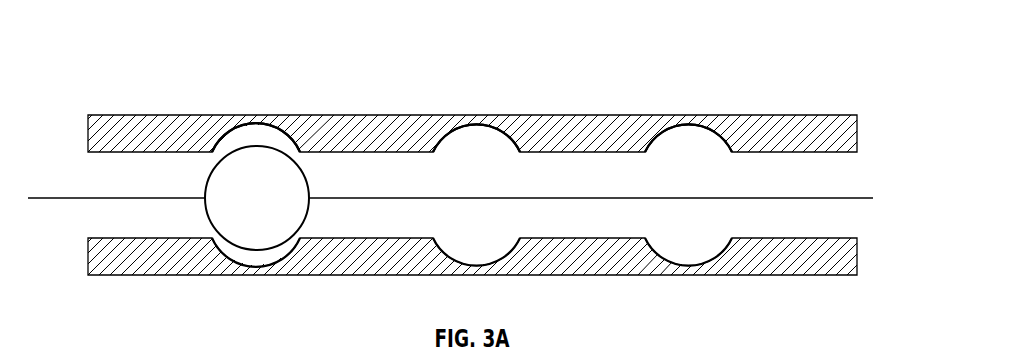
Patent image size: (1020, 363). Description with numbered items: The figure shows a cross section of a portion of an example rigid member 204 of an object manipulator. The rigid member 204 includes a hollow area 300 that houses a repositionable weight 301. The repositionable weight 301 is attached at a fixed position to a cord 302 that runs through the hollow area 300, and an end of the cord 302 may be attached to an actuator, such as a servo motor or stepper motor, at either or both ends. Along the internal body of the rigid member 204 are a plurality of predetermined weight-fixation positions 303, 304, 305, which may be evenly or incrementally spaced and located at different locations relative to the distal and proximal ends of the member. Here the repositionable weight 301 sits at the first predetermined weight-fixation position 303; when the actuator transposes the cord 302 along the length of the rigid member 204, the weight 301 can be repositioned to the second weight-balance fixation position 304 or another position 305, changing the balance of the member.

The rigid member 204 is at (145, 37).
The hollow area 300 is at (863, 159).
The repositionable weight 301 is at (239, 204).
The cord 302 is at (109, 182).
The first predetermined weight-fixation position 303 is at (256, 122).
The second weight-balance fixation position 304 is at (482, 122).
The predetermined weight-fixation position 305 is at (694, 122).